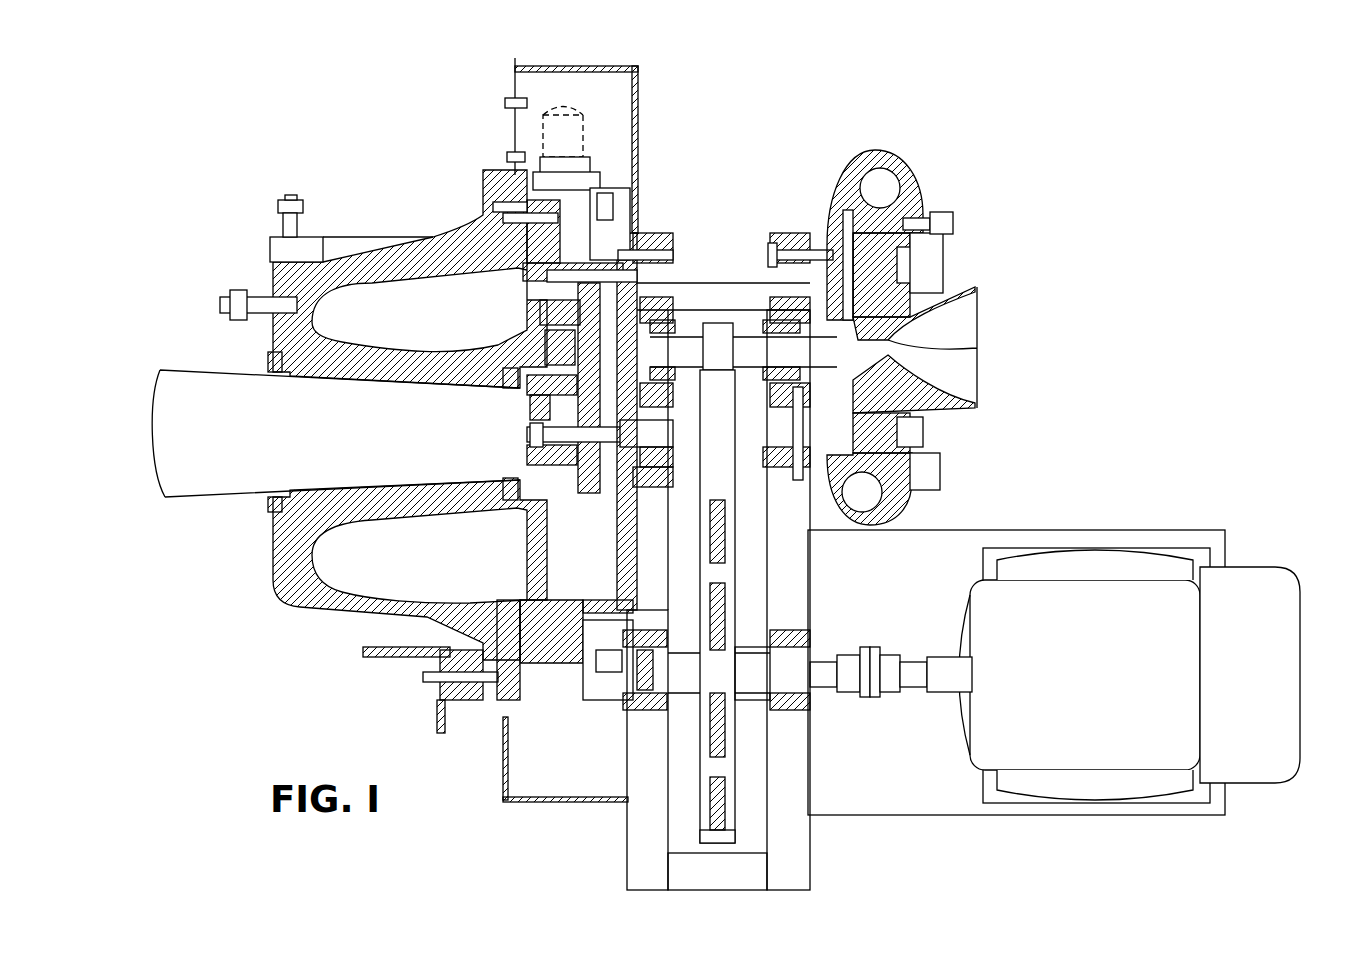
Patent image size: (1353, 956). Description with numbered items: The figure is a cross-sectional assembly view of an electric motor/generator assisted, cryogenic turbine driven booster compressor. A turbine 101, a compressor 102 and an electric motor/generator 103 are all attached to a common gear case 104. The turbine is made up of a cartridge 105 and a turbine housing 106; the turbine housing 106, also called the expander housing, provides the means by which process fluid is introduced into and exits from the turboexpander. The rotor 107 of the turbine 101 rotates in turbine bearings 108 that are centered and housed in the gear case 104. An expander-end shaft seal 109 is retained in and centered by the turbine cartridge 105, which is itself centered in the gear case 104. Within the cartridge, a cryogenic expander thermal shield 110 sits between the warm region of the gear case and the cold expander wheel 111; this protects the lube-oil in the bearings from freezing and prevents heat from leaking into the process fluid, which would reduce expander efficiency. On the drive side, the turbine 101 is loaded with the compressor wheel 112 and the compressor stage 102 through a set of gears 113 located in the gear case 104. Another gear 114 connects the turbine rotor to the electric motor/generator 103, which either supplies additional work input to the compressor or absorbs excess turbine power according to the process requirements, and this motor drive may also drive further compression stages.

The turbine 101 is at (627, 350).
The compressor 102 is at (870, 148).
The electric motor/generator 103 is at (1113, 552).
The gear case 104 is at (813, 845).
The cartridge 105 is at (533, 597).
The turbine housing 106 is at (393, 258).
The rotor 107 is at (692, 407).
The turbine bearings 108 is at (680, 422).
The expander-end shaft seal 109 is at (595, 470).
The cryogenic expander thermal shield 110 is at (588, 335).
The expander wheel 111 is at (575, 400).
The compressor wheel 112 is at (923, 338).
The set of gears 113 is at (745, 370).
The gear 114 is at (720, 735).